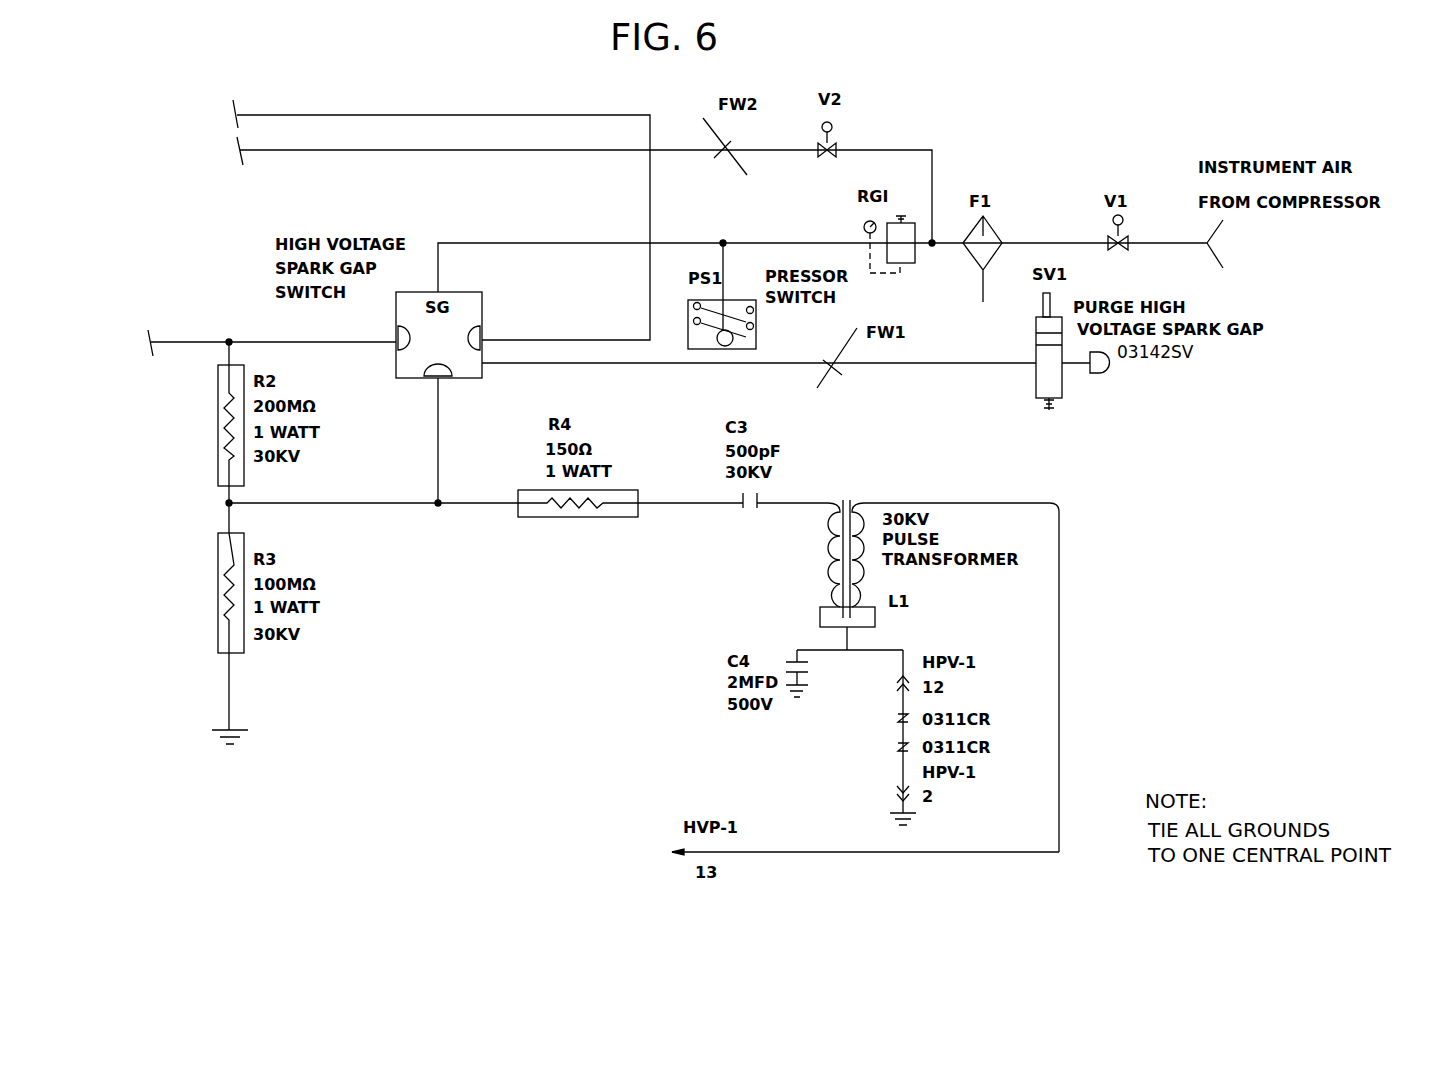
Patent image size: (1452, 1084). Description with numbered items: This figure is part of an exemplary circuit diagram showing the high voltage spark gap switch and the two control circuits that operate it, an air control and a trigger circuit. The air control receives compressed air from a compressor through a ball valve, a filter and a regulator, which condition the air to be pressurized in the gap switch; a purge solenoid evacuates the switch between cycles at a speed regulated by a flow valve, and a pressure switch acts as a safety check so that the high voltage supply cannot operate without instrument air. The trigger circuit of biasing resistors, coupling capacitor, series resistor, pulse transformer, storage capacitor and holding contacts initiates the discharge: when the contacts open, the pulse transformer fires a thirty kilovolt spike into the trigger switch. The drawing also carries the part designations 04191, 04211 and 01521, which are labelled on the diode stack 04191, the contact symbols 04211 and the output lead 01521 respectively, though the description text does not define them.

The high voltage diode assembly HPV-1 04191 is at (903, 665).
The spark gap / surge protector 0311CR 04211 is at (900, 733).
The high voltage pulse output lead HVP-1 01521 is at (740, 855).